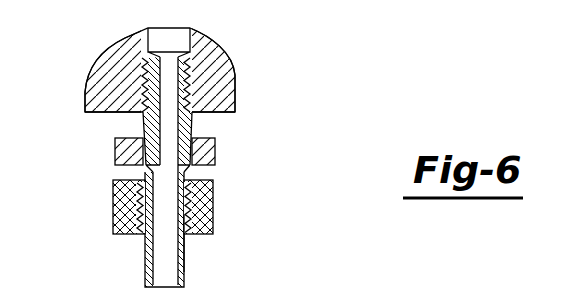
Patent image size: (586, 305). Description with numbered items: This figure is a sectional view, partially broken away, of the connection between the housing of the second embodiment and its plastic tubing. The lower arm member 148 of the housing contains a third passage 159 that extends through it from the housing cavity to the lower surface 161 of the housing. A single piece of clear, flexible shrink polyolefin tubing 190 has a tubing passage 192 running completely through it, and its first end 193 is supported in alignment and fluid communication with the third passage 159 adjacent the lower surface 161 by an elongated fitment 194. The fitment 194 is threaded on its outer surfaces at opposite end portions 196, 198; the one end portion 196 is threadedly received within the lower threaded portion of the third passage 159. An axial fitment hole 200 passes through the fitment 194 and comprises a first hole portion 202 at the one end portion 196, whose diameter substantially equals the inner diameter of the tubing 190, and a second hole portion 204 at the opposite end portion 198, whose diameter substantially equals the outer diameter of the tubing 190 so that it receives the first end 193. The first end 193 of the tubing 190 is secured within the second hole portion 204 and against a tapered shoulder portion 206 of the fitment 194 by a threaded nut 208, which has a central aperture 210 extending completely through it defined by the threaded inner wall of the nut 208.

The lower arm member 148 is at (224, 97).
The third passage 159 is at (186, 35).
The lower surface 161 is at (219, 117).
The tubing 190 is at (185, 276).
The tubing passage 192 is at (186, 258).
The first end 193 is at (216, 166).
The fitment 194 is at (116, 157).
The one end portion 196 is at (121, 111).
The opposite end portion 198 is at (145, 165).
The axial fitment hole 200 is at (170, 107).
The first hole portion 202 is at (176, 78).
The second hole portion 204 is at (186, 232).
The tapered shoulder portion 206 is at (117, 208).
The threaded nut 208 is at (205, 190).
The central aperture 210 is at (204, 203).